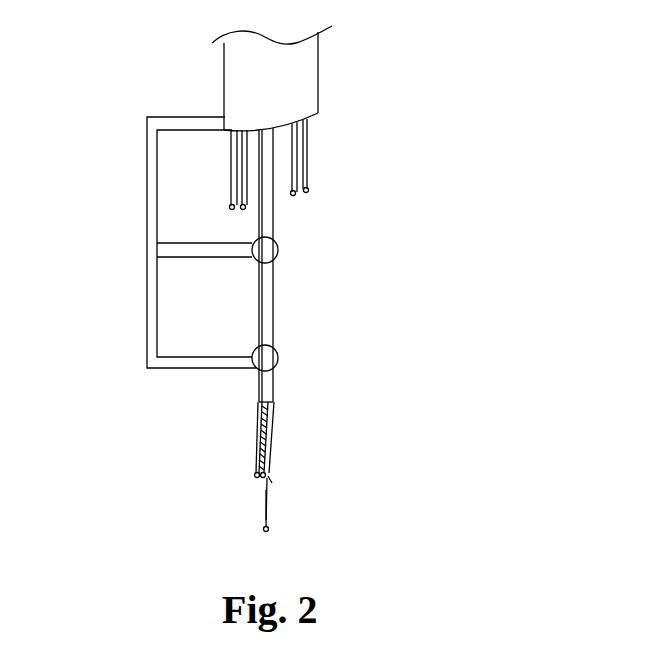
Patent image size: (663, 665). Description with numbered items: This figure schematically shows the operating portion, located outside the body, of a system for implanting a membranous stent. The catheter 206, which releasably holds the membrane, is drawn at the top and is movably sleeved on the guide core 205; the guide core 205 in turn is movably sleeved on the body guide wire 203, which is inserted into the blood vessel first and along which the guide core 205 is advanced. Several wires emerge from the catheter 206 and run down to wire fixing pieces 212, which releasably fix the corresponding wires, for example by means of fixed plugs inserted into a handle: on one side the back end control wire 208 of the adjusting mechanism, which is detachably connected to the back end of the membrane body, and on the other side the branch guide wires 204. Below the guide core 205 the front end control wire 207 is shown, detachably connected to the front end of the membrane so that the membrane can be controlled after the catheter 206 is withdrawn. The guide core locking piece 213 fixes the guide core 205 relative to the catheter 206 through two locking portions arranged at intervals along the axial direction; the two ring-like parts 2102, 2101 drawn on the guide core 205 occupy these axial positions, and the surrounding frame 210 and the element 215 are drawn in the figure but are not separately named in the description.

The catheter 206 is at (235, 68).
The bracket 210 is at (148, 147).
The guide core 205 is at (259, 283).
The upper bearing 2102 is at (278, 248).
The lower bearing 2101 is at (278, 358).
The back end control wire 208 is at (232, 155).
The branch guide wires 204 is at (310, 137).
The wire fixing pieces 212 is at (238, 208).
The front end control wire 207 is at (273, 415).
The connecting line 215 is at (268, 482).
The body guide wire 203 is at (265, 512).
The guide core locking piece 213 is at (269, 531).